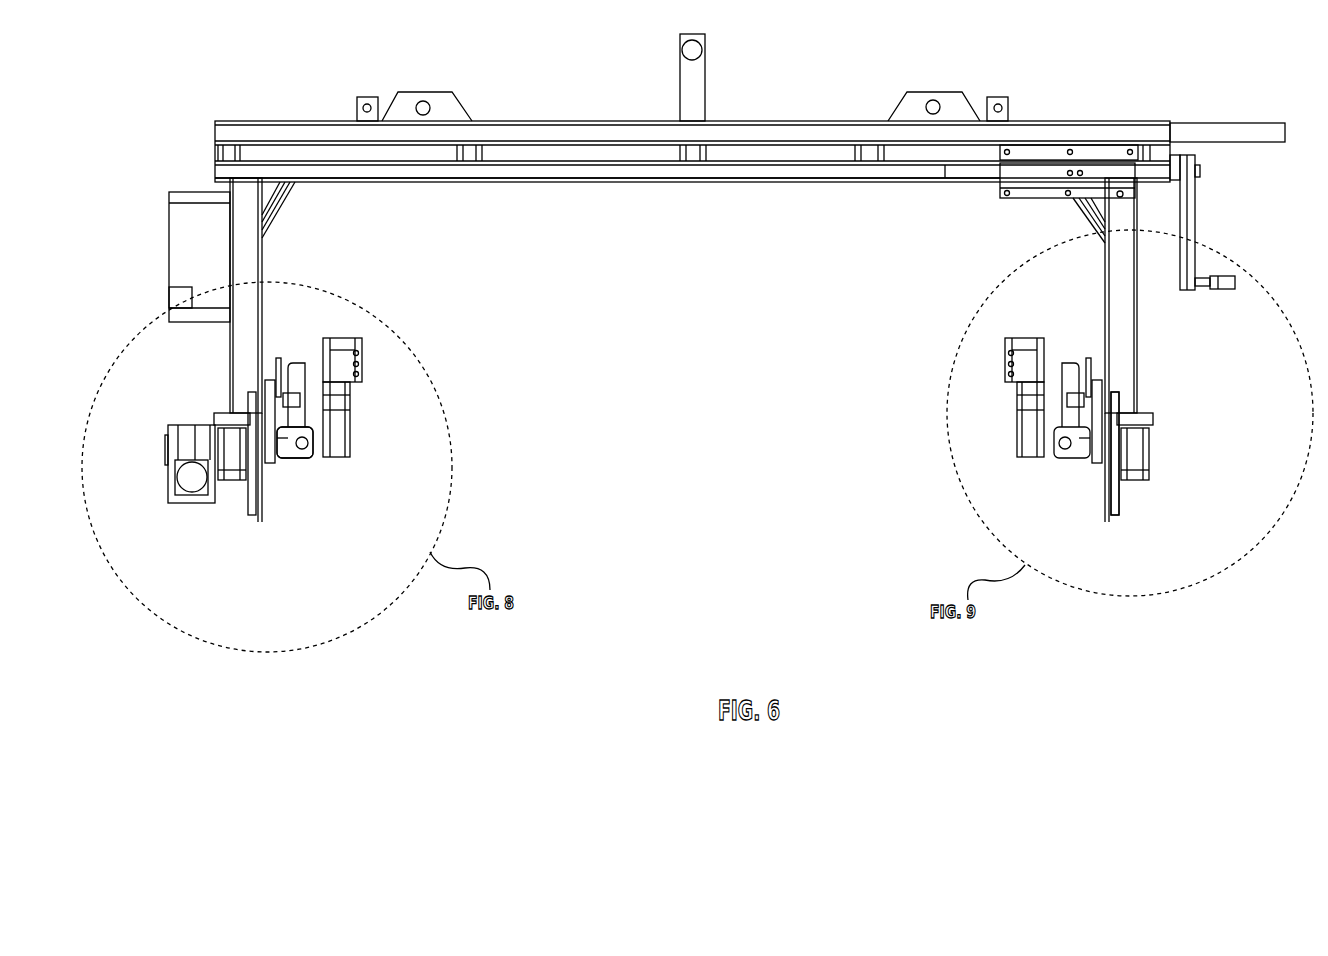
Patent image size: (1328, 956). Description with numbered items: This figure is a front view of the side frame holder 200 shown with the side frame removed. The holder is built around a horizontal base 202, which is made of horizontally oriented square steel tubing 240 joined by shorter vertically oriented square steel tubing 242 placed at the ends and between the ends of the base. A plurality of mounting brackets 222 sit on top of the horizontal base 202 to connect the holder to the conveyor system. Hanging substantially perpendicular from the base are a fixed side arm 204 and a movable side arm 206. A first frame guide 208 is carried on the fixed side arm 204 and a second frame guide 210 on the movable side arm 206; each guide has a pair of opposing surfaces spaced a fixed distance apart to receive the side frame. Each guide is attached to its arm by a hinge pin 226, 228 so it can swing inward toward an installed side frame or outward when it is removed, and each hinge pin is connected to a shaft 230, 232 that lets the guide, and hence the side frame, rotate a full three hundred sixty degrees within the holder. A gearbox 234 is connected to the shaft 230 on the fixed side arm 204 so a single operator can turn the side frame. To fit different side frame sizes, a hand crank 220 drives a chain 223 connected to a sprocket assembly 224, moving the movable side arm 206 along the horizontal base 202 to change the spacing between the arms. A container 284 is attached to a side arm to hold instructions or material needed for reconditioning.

The side frame holder 200 is at (783, 122).
The horizontal base 202 is at (1052, 122).
The fixed side arm 204 is at (245, 332).
The movable side arm 206 is at (1124, 340).
The first frame guide 208 is at (340, 437).
The second frame guide 210 is at (1028, 447).
The hand crank 220 is at (1225, 283).
The mounting brackets 222 is at (427, 102).
The chain 223 is at (1196, 232).
The sprocket assembly 224 is at (1200, 170).
The hinge pin 226 is at (300, 450).
The hinge pin 228 is at (1062, 453).
The shaft 230 is at (295, 450).
The shaft 232 is at (1103, 453).
The gearbox 234 is at (197, 492).
The square steel tubing 240 is at (637, 173).
The vertically oriented square steel tubing 242 is at (468, 152).
The container 284 is at (198, 212).